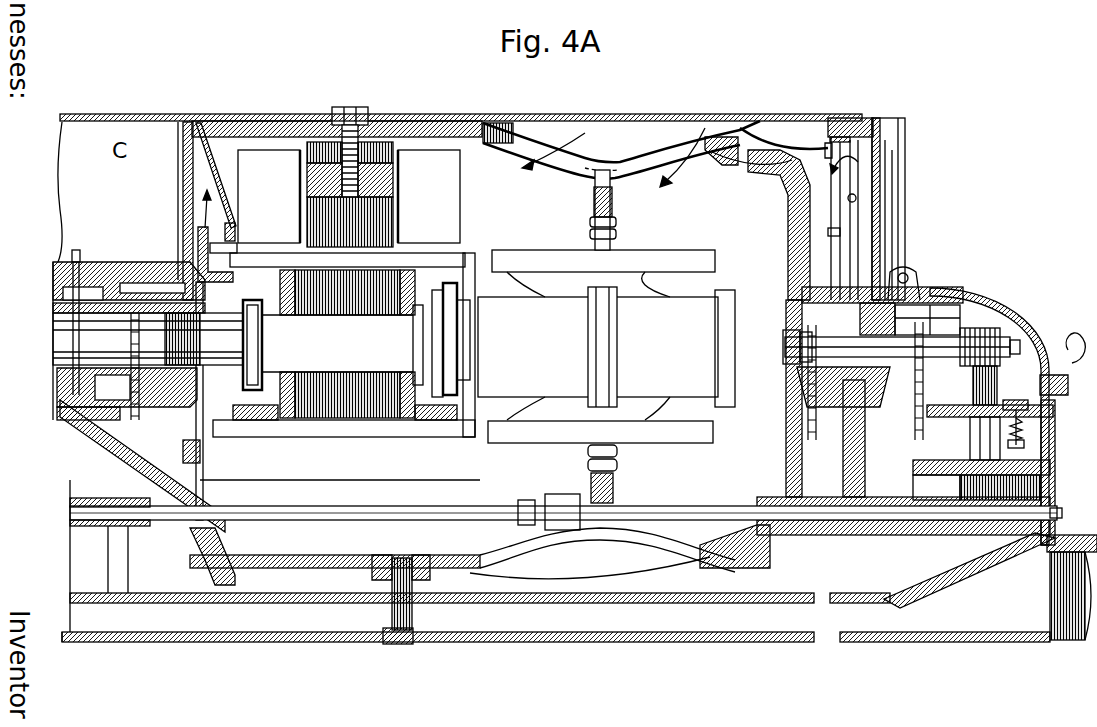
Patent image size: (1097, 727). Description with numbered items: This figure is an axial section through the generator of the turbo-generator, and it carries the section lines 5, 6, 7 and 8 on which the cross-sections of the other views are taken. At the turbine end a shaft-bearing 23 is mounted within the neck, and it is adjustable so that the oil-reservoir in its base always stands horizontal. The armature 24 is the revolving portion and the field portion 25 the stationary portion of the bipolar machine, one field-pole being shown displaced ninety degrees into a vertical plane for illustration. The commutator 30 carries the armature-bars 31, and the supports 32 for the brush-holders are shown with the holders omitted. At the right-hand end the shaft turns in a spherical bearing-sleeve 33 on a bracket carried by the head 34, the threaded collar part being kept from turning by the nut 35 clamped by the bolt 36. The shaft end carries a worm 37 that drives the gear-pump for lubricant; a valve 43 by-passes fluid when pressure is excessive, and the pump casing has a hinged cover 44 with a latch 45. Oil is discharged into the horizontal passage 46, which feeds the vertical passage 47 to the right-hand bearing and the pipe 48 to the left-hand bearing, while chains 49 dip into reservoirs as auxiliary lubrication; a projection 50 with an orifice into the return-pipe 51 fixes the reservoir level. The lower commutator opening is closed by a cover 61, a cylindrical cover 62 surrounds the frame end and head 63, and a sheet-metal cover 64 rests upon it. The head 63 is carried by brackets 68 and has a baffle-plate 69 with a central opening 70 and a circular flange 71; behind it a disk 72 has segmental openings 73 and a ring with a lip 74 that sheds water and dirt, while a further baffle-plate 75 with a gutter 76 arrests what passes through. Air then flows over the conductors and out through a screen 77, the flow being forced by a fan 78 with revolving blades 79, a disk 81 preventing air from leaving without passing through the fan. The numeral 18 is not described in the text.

The section line 5 5 is at (135, 665).
The section line 6 6 is at (222, 665).
The section line 7 7 is at (838, 690).
The section line 8 8 is at (583, 672).
The frame 18 is at (503, 605).
The shaft-bearing 23 is at (62, 409).
The armature 24 is at (353, 300).
The field portion 25 is at (437, 212).
The commutator 30 is at (606, 346).
The armature-bars 31 is at (457, 250).
The supports for the brush-holders 32 is at (663, 249).
The spherical bearing-sleeve 33 is at (905, 298).
The head of the generator 34 is at (906, 280).
The nut 35 is at (965, 330).
The bolt 36 is at (907, 312).
The worm 37 is at (1000, 338).
The valve 43 is at (1025, 435).
The hinged cover 44 is at (1003, 340).
The latch 45 is at (1072, 363).
The horizontal passage 46 is at (952, 515).
The vertical passage 47 is at (858, 455).
The pipe 48 is at (437, 497).
The chains 49 is at (812, 442).
The projection 50 is at (95, 432).
The return-pipe 51 is at (352, 497).
The cover 61 is at (607, 577).
The cylindrical cover 62 is at (745, 117).
The head 63 is at (848, 118).
The sheet-metal cover 64 is at (632, 114).
The brackets 68 is at (790, 150).
The baffle-plate 69 is at (882, 157).
The central opening 70 is at (880, 229).
The circular flange 71 is at (905, 128).
The disk 72 is at (850, 190).
The segmental openings 73 is at (863, 148).
The lip 74 is at (878, 216).
The baffle-plate 75 is at (830, 180).
The gutter 76 is at (828, 230).
The screen 77 is at (185, 201).
The fan 78 is at (245, 250).
The revolving blades 79 is at (238, 228).
The disk 81 is at (210, 163).